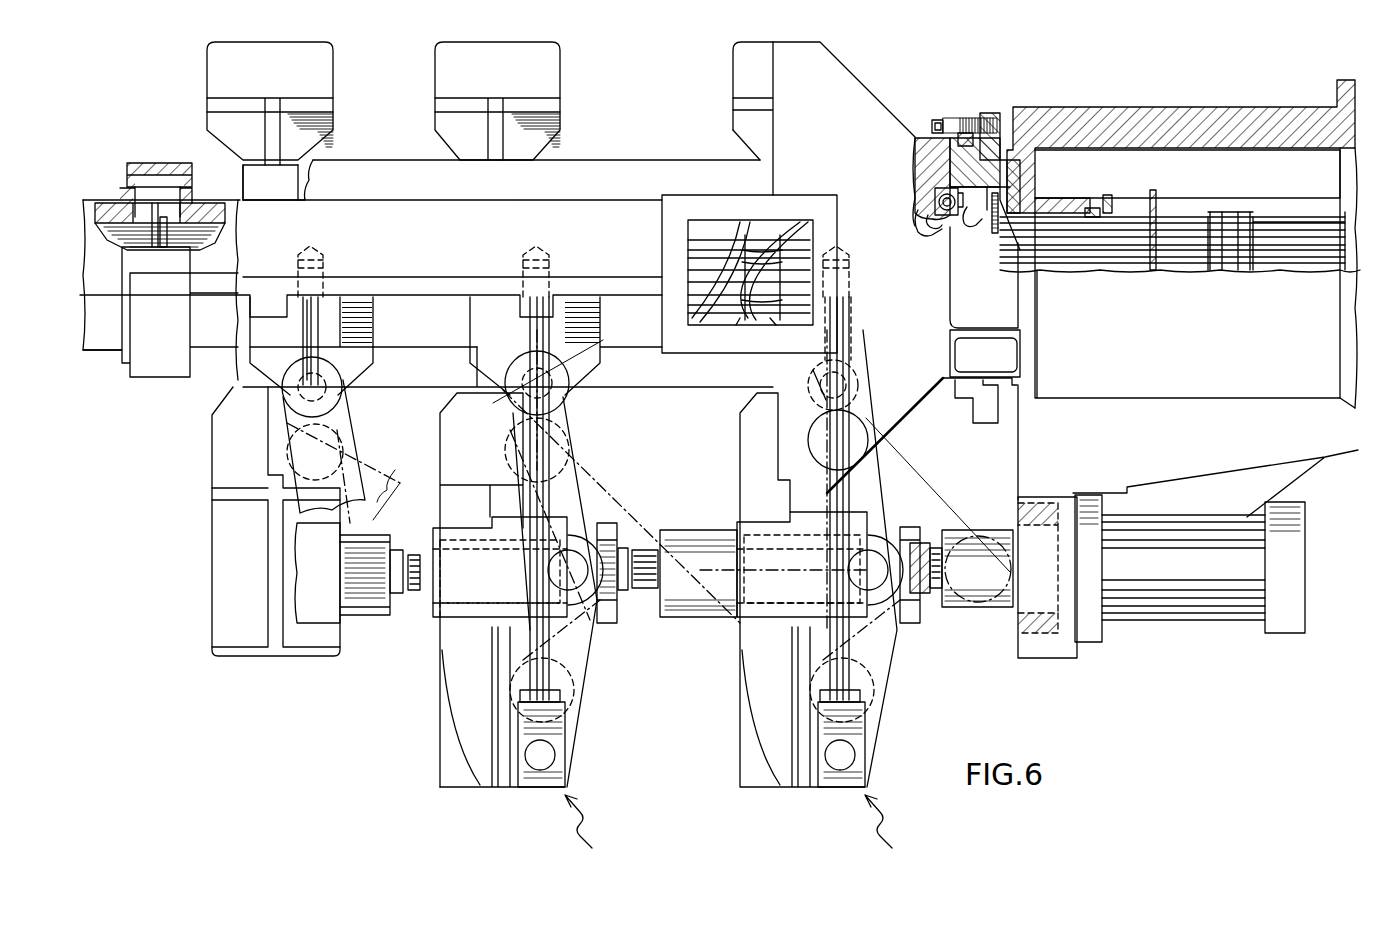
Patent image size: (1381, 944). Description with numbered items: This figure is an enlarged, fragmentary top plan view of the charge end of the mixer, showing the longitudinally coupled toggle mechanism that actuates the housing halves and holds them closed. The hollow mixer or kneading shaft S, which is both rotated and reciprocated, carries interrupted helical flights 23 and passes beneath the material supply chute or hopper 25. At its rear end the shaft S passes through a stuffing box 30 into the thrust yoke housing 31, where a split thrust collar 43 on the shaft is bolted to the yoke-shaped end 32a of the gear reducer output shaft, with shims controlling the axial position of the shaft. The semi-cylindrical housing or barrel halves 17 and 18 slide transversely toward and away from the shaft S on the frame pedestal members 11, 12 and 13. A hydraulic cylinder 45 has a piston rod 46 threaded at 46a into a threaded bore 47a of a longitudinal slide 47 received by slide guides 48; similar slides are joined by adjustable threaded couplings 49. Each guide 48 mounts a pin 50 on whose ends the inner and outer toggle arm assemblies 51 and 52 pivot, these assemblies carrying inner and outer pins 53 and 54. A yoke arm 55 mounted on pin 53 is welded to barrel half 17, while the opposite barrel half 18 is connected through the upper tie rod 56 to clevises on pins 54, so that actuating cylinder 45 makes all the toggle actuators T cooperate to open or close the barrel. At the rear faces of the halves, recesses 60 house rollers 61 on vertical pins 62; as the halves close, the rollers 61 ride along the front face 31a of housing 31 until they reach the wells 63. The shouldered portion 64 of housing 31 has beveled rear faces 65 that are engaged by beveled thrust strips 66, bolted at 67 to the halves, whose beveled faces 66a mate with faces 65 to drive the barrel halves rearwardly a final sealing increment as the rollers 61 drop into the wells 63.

The support base or pedestal member 11 is at (852, 64).
The support base or pedestal member 12 is at (556, 68).
The support base or pedestal member 13 is at (328, 68).
The housing or barrel half 17 is at (940, 384).
The housing or barrel half 18 is at (915, 156).
The interrupted helical flights 23 is at (706, 224).
The material supply chute or hopper 25 is at (792, 200).
The stuffing box 30 is at (1120, 186).
The thrust yoke housing 31 is at (1254, 109).
The front face of housing part 31a is at (1016, 180).
The yoke-shaped outer end of output shaft 32a is at (1276, 218).
The split thrust collar 43 is at (1214, 212).
The hydraulic cylinder 45 is at (1190, 620).
The piston rod 46 is at (986, 604).
The threaded portion of piston rod 46a is at (940, 595).
The longitudinal slide 47 is at (384, 605).
The threaded bore 47a is at (922, 544).
The slide guide 48 is at (609, 616).
The adjustable threaded coupling 49 is at (408, 554).
The pin 50 is at (560, 571).
The inner toggle arm assembly 51 is at (568, 480).
The outer toggle arm assembly 52 is at (573, 692).
The inner pin 53 is at (510, 398).
The outer pin 54 is at (540, 768).
The yoke arm 55 is at (480, 357).
The upper tie rod 56 is at (304, 336).
The openings or recesses 60 is at (933, 206).
The rollers 61 is at (929, 222).
The vertical pins 62 is at (945, 226).
The recesses or wells 63 is at (982, 228).
The shouldered portion 64 is at (943, 168).
The beveled rear faces 65 is at (983, 114).
The beveled thrust plates or strips 66 is at (994, 113).
The beveled faces of strips 66a is at (960, 116).
The bolts 67 is at (930, 122).
The hollow mixer or kneading shaft S is at (150, 250).
The toggle actuator T is at (586, 822).